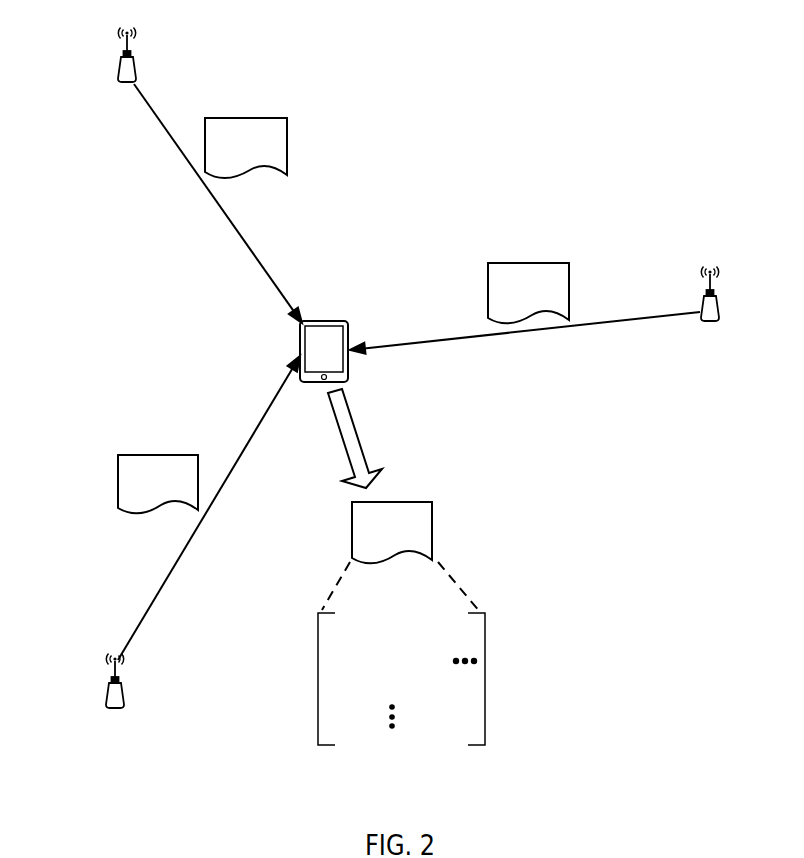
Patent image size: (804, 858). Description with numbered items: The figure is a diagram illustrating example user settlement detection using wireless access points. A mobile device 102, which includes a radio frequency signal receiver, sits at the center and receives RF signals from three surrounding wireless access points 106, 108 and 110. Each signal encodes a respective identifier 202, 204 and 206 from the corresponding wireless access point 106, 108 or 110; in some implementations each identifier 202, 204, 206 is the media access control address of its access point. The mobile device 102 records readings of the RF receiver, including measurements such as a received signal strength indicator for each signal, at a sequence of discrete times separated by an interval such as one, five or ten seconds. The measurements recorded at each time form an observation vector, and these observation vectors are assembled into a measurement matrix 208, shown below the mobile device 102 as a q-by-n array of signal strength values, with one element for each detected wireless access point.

The mobile device 102 is at (322, 321).
The wireless access point 106 is at (122, 52).
The wireless access point 108 is at (108, 695).
The wireless access point 110 is at (705, 290).
The identifier 202 is at (262, 156).
The identifier 204 is at (171, 492).
The identifier 206 is at (544, 302).
The measurement matrix 208 is at (408, 538).